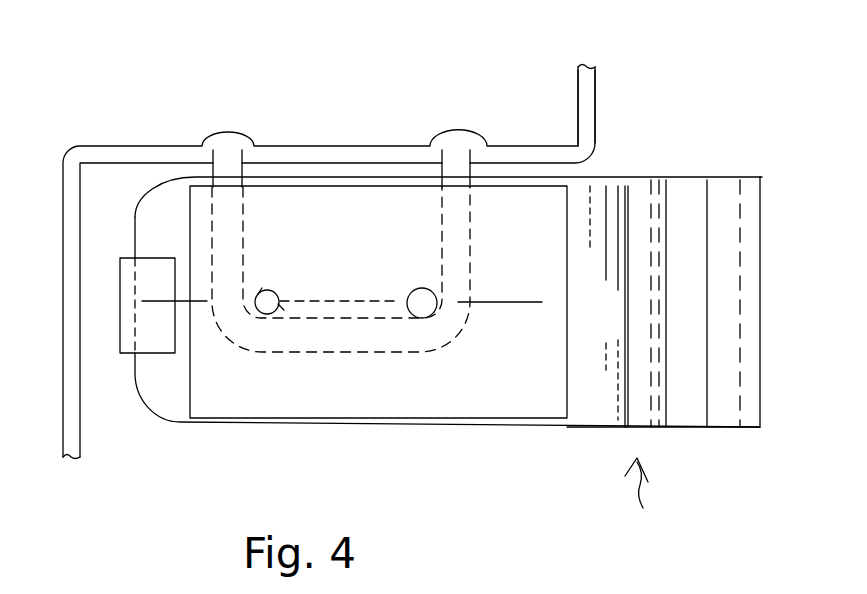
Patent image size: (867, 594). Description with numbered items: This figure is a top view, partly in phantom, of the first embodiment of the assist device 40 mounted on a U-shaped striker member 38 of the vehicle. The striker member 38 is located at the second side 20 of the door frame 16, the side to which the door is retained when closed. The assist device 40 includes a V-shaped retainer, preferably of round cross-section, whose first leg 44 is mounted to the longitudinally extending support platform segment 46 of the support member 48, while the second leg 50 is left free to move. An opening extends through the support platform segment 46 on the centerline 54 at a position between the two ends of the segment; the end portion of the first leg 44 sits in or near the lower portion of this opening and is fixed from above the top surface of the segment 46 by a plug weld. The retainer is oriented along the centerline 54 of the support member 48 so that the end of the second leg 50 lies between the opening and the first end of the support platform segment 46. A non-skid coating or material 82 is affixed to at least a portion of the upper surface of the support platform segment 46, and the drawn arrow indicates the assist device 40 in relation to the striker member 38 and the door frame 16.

The door frame 16 is at (595, 92).
The second side 20 is at (146, 146).
The U-shaped striker member 38 is at (474, 244).
The assist device 40 is at (639, 509).
The first leg 44 is at (420, 290).
The support platform segment 46 is at (372, 427).
The support member 48 is at (668, 200).
The second leg 50 is at (275, 290).
The centerline 54 is at (530, 305).
The non-skid coating or material 82 is at (253, 388).